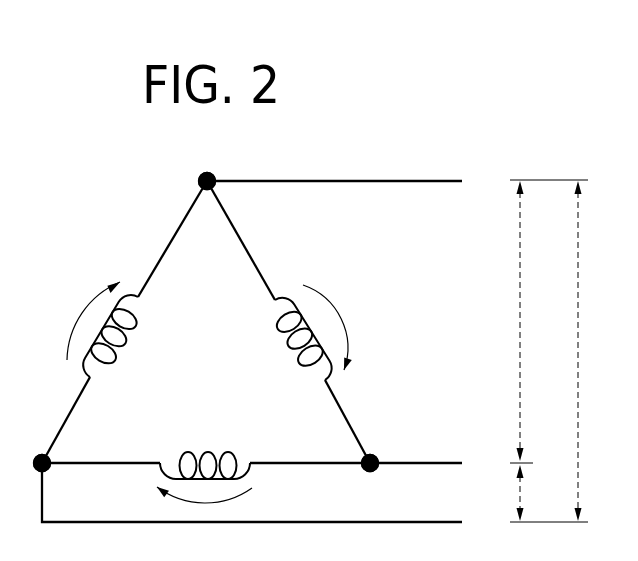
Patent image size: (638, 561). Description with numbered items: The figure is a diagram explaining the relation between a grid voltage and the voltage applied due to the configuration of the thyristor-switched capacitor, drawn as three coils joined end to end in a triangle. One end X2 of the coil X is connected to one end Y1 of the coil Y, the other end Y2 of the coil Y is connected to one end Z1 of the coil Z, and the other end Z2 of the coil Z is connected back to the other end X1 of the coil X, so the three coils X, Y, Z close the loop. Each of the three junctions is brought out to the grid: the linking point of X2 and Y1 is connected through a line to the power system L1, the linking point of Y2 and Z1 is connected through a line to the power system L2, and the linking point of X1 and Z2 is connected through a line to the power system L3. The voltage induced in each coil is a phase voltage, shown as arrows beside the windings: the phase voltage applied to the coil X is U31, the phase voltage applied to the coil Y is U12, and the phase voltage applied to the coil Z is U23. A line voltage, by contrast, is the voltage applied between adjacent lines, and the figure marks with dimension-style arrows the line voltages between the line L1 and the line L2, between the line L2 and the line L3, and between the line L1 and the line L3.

The coil X is at (116, 336).
The coil Y is at (299, 339).
The coil Z is at (205, 449).
The other end of coil X X1 is at (34, 449).
The one end of coil X X2 is at (189, 194).
The one end of coil Y Y1 is at (225, 194).
The other end of coil Y Y2 is at (379, 449).
The one end of coil Z Z1 is at (369, 478).
The other end of coil Z Z2 is at (57, 480).
The power system L1 is at (353, 180).
The power system L2 is at (434, 462).
The power system L3 is at (270, 498).
The phase voltage applied to coil X U31 is at (90, 314).
The phase voltage applied to coil Y U12 is at (341, 327).
The phase voltage applied to coil Z U23 is at (186, 490).